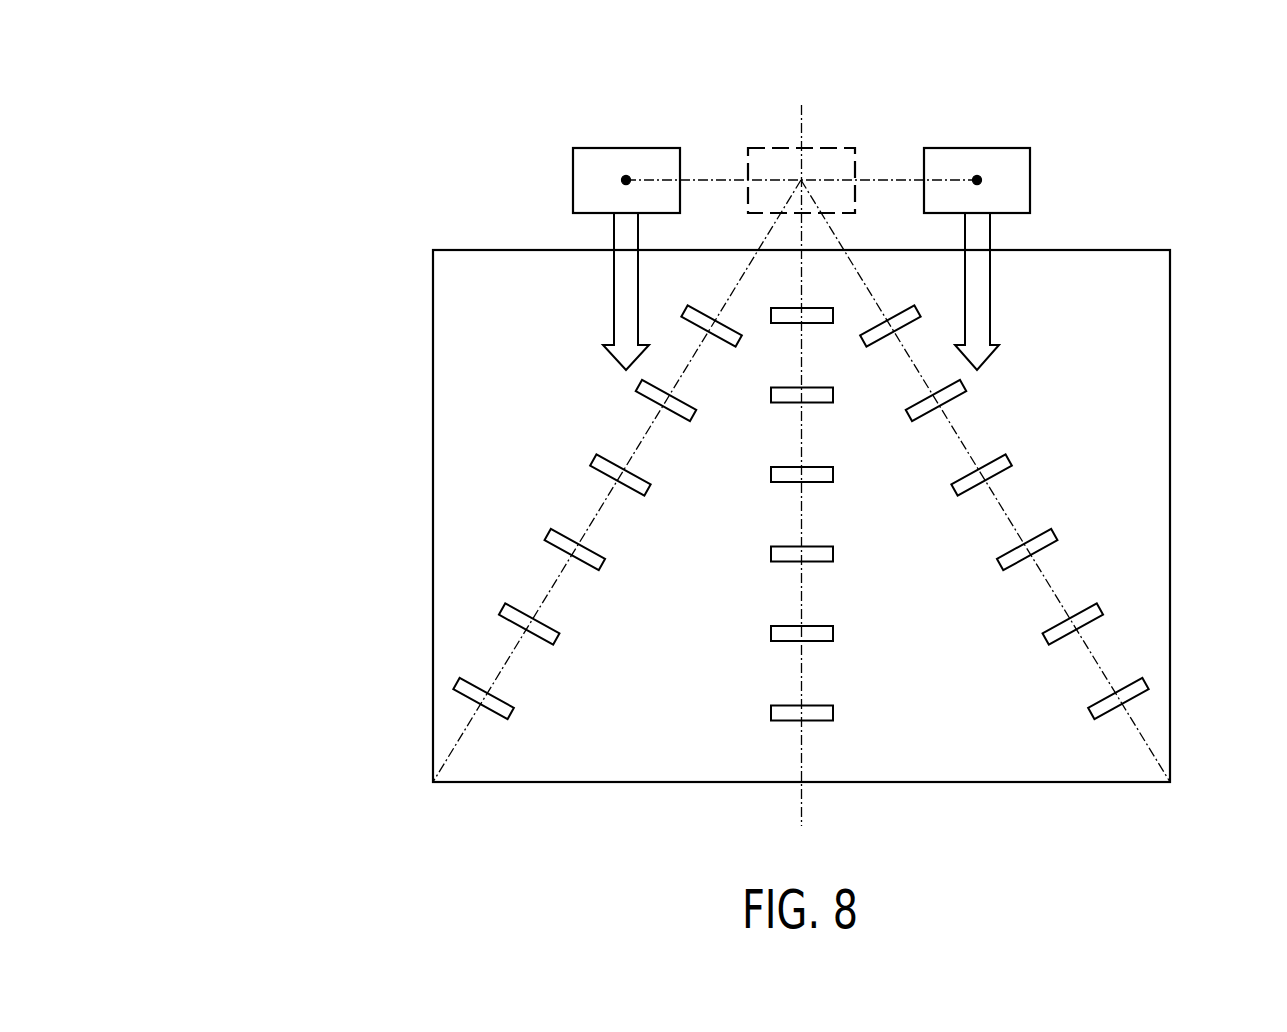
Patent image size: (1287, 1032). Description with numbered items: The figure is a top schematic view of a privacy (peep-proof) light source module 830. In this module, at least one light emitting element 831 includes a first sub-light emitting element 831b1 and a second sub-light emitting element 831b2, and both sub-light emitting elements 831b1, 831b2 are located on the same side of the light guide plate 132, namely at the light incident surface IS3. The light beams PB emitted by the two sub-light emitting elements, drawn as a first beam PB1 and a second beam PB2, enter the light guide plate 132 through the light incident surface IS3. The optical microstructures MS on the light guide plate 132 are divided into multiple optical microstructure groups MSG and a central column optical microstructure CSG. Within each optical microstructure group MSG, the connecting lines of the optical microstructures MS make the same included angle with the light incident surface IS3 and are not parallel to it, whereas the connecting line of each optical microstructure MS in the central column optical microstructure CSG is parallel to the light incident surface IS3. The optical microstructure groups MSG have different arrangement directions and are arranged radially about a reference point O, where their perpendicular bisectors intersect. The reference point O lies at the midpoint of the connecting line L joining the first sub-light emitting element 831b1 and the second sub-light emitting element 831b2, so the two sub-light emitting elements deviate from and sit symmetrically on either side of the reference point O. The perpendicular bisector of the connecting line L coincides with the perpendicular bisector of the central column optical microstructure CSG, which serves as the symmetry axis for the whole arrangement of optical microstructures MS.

The light emitting element 831 is at (192, 30).
The first sub-light emitting element 831b1 is at (1013, 183).
The second sub-light emitting element 831b2 is at (590, 183).
The optical microstructures MS is at (347, 30).
The optical microstructure groups MSG is at (484, 641).
The central column optical microstructure CSG is at (831, 656).
The probe beams PB is at (502, 30).
The first probe beam PB1 is at (977, 305).
The second probe beam PB2 is at (627, 306).
The reference point O is at (803, 175).
The connecting line L is at (883, 178).
The light incident surface IS3 is at (1147, 249).
The light guide plate 132 is at (1157, 552).
The privacy light source module 830 is at (1258, 845).